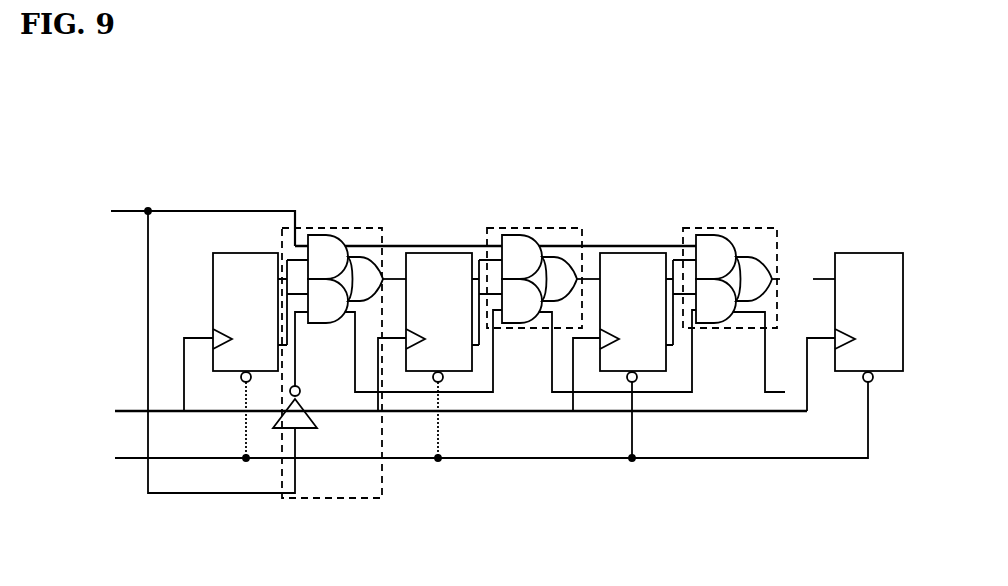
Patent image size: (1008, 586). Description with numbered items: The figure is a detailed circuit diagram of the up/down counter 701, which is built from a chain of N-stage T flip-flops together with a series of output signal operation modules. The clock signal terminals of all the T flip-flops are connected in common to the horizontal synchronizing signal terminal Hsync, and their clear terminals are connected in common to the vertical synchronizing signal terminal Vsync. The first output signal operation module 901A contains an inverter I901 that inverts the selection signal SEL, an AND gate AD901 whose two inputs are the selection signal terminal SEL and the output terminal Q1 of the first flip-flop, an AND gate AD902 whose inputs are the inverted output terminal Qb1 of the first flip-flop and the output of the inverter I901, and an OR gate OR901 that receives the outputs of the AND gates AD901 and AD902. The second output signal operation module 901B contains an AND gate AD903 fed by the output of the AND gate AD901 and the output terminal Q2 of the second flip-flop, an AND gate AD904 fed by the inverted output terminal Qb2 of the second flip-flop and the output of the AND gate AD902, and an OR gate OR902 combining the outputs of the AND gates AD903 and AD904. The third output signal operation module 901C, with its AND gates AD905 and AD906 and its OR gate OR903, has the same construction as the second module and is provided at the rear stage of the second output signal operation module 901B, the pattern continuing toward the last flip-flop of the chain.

The up/down counter 701 is at (465, 307).
The AND gate AD901 is at (326, 235).
The AND gate AD902 is at (319, 323).
The AND gate AD903 is at (519, 235).
The AND gate AD904 is at (512, 323).
The AND gate AD905 is at (706, 235).
The AND gate AD906 is at (710, 323).
The OR gate OR901 is at (370, 257).
The OR gate OR902 is at (565, 257).
The OR gate OR903 is at (752, 257).
The first output signal operation module 901A is at (311, 420).
The inverter I901 is at (333, 498).
The second output signal operation module 901B is at (573, 328).
The third output signal operation module 901C is at (765, 328).